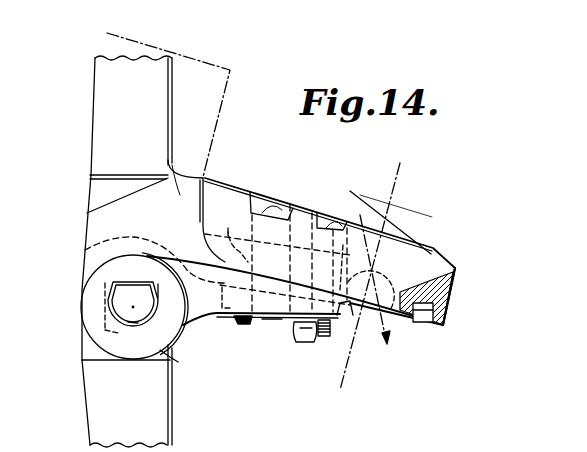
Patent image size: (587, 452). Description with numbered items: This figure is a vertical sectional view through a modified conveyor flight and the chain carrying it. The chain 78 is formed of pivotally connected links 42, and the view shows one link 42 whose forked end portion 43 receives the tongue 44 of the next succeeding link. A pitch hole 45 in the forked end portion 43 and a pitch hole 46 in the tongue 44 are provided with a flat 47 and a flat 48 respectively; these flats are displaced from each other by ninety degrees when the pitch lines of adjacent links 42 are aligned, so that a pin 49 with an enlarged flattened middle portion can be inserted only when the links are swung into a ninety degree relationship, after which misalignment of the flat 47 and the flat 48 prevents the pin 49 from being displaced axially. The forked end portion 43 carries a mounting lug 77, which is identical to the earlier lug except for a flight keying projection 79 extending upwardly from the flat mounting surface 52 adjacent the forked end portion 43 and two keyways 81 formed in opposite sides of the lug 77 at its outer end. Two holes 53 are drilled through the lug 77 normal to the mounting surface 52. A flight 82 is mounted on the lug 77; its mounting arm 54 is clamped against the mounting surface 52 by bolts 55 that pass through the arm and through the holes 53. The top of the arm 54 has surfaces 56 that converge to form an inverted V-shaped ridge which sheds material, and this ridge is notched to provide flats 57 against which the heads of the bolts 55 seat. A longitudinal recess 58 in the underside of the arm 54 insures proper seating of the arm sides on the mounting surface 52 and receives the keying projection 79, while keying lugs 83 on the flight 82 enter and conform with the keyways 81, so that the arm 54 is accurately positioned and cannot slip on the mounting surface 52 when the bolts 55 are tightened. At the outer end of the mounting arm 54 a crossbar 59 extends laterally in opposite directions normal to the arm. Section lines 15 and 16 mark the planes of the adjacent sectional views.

The section line 15- 15 is at (116, 48).
The section line 16- 16 is at (384, 167).
The link 42 is at (107, 89).
The chain 78 is at (88, 149).
The forked end portion 43 is at (172, 322).
The tongue 44 is at (180, 363).
The flat 47 is at (136, 282).
The pitch hole 45 is at (158, 293).
The flat 48 is at (110, 320).
The pitch hole 46 is at (112, 330).
The pin 49 is at (135, 323).
The mounting surface 52 is at (300, 282).
The mounting arm 54 is at (434, 240).
The converging surfaces 56 is at (402, 245).
The flight 82 is at (462, 284).
The flats 57 is at (330, 212).
The holes 53 is at (240, 266).
The flight keying projection 79 is at (228, 232).
The keying lugs 83 is at (353, 267).
The recess 58 is at (403, 293).
The crossbar 59 is at (443, 303).
The keyways 81 is at (348, 318).
The bolts 55 is at (243, 325).
The mounting lug 77 is at (273, 320).